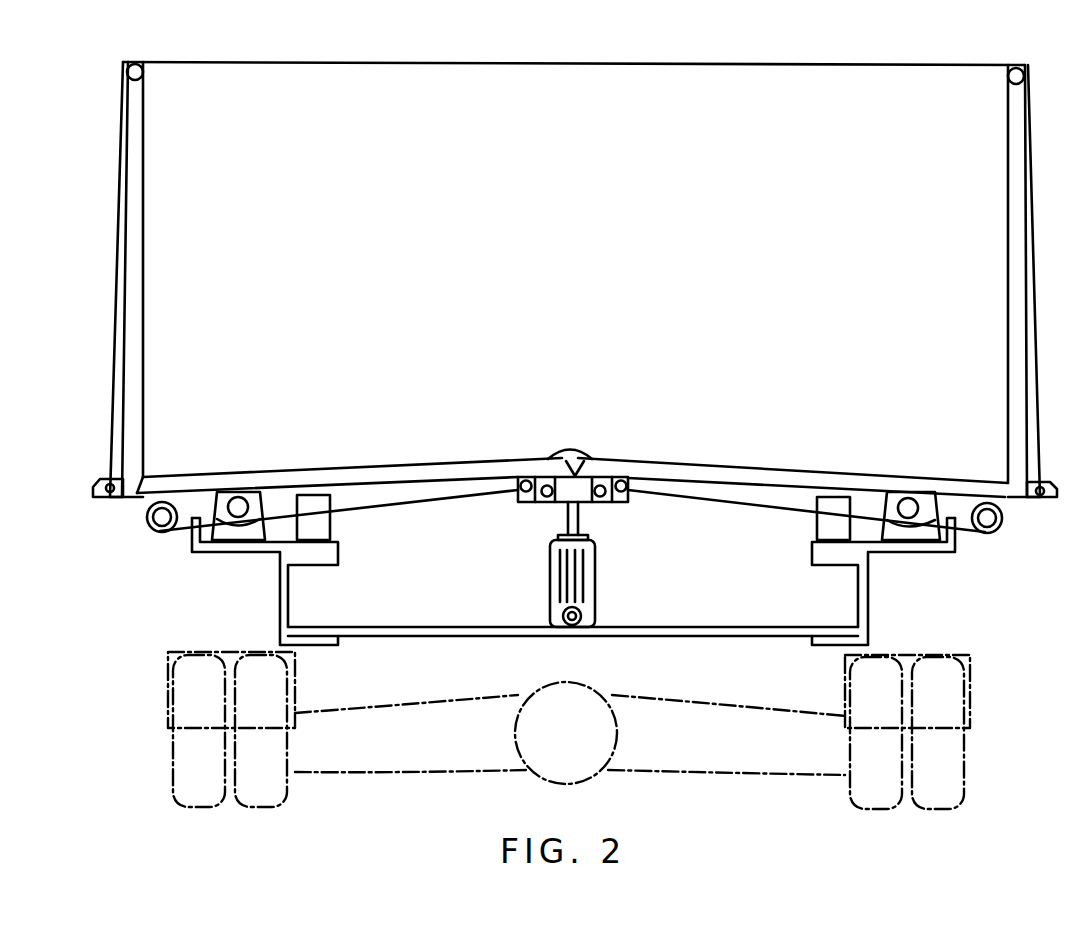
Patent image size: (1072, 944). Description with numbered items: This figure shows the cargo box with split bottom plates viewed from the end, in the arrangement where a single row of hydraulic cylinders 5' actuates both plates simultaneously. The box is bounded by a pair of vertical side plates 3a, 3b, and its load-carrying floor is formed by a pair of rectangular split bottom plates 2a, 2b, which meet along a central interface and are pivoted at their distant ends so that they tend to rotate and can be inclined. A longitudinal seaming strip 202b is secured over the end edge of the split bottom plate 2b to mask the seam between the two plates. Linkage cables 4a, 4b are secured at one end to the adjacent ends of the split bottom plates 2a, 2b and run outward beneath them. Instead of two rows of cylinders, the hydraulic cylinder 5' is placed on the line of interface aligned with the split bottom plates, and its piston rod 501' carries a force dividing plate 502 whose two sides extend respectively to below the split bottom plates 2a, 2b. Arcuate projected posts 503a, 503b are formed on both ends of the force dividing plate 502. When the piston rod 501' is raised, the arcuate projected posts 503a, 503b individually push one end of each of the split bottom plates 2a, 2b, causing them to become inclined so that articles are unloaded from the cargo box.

The vertical side plate 3a is at (137, 192).
The vertical side plate 3b is at (1010, 200).
The split bottom plate 2a is at (340, 470).
The split bottom plate 2b is at (826, 470).
The longitudinal seaming strip 202b is at (578, 447).
The arcuate projected post 503a is at (522, 470).
The arcuate projected post 503b is at (626, 470).
The force dividing plate 502 is at (562, 505).
The piston rod 501' is at (609, 519).
The hydraulic cylinder 5' is at (596, 581).
The linkage cable 4a is at (428, 505).
The linkage cable 4b is at (740, 507).